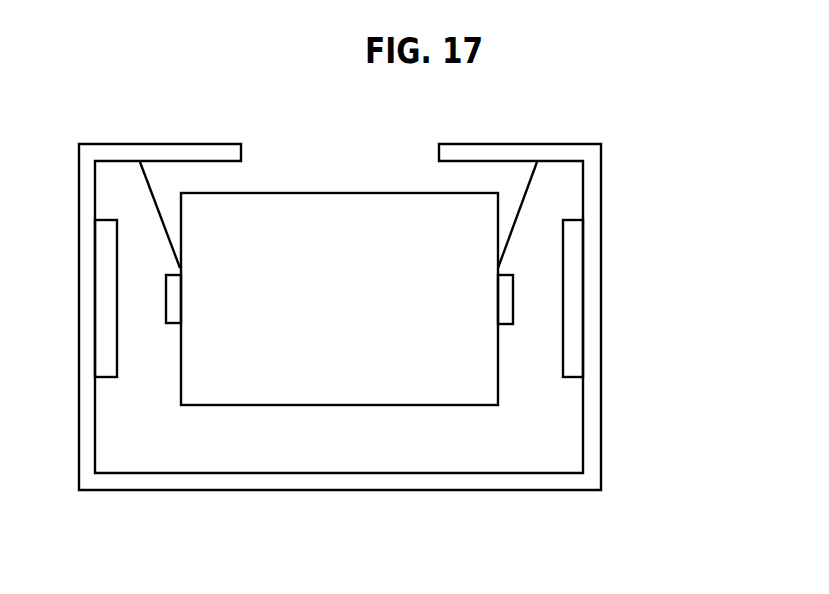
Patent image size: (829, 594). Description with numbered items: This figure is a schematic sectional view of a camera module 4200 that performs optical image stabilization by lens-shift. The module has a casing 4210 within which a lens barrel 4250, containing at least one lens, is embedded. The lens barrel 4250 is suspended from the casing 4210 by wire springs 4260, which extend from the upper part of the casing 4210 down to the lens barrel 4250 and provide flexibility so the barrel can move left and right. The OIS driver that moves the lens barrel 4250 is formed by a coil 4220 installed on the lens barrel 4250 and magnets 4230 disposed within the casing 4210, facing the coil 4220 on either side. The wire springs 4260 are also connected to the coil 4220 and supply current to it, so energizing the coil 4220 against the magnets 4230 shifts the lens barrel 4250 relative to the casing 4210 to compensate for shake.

The camera module 4200 is at (626, 261).
The casing 4210 is at (596, 162).
The coil 4220 is at (507, 315).
The magnets 4230 is at (575, 303).
The lens barrel 4250 is at (459, 392).
The wire springs 4260 is at (530, 187).